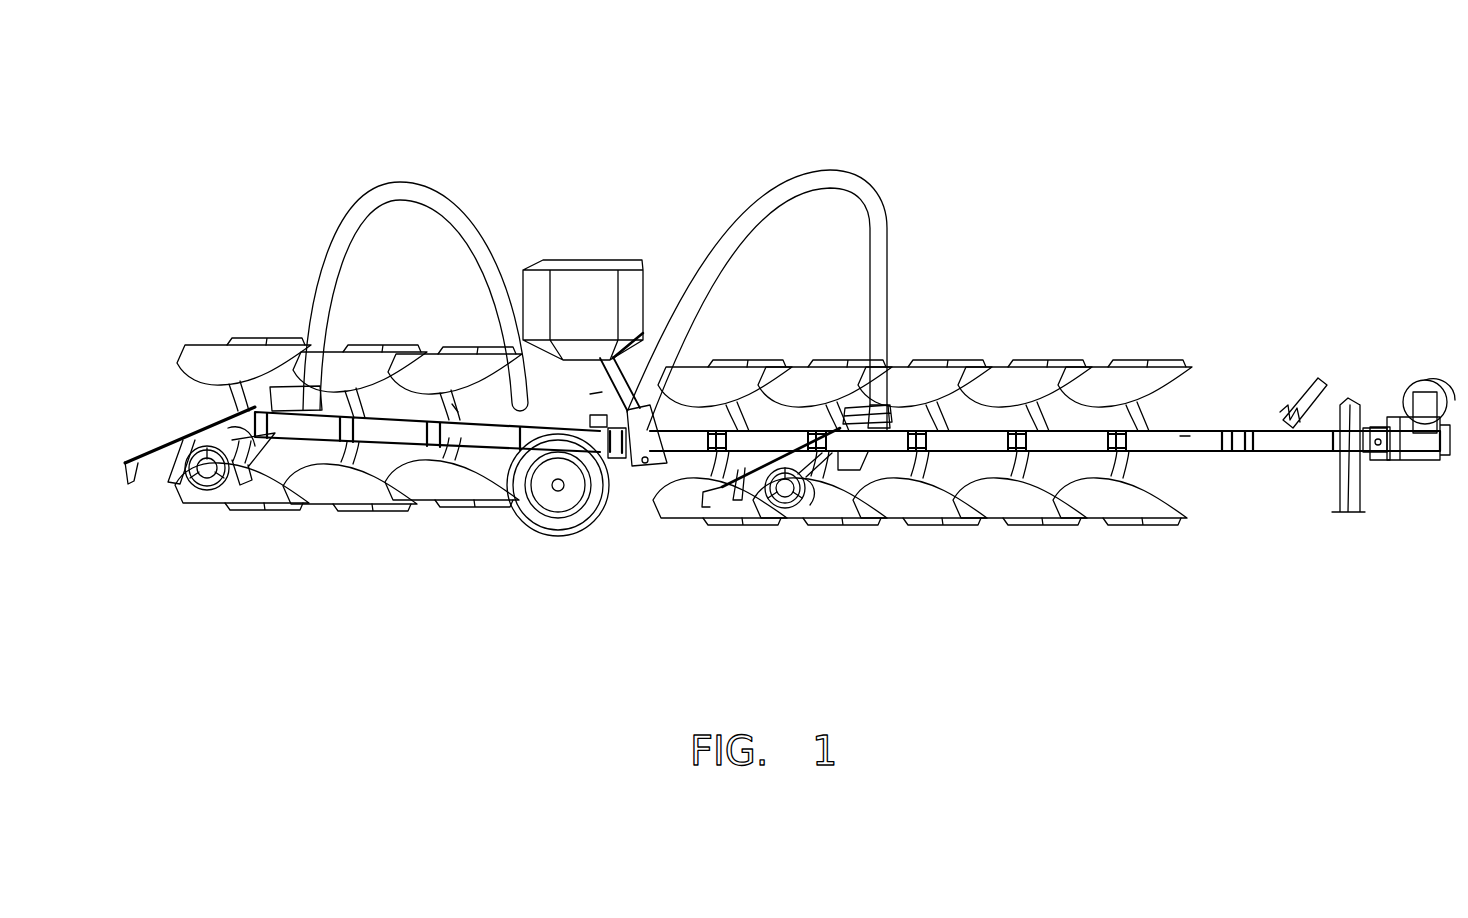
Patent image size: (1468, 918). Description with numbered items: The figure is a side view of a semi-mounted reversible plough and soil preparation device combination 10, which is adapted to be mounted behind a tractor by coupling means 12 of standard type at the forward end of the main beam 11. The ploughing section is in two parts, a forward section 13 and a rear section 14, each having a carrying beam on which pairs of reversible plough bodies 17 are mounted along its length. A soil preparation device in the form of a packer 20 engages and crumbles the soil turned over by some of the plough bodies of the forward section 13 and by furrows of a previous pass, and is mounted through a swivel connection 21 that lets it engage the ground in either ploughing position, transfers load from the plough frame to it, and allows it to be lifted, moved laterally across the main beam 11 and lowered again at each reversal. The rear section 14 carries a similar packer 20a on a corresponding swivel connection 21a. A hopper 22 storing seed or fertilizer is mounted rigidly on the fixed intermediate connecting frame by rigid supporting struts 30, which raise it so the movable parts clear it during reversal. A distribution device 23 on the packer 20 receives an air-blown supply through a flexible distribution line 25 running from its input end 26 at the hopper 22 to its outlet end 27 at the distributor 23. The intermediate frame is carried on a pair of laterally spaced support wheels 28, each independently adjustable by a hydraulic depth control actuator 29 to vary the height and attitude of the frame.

The reversible plough/soil preparation device combination 10 is at (943, 328).
The main beam 11 is at (1217, 424).
The coupling means 12 is at (1386, 398).
The forward section 13 is at (744, 577).
The rear section 14 is at (407, 564).
The reversible plough bodies 17 is at (1180, 440).
The packer 20 is at (792, 512).
The packer 20a is at (206, 492).
The swivel connection 21 is at (862, 475).
The swivel connection 21a is at (284, 498).
The hopper 22 is at (611, 256).
The distribution device 23 is at (852, 455).
The distribution line 25 is at (878, 205).
The input end 26 is at (636, 400).
The outlet end 27 is at (877, 398).
The support wheels 28 is at (557, 536).
The hydraulic depth control actuator 29 is at (645, 464).
The rigid supporting struts 30 is at (643, 437).